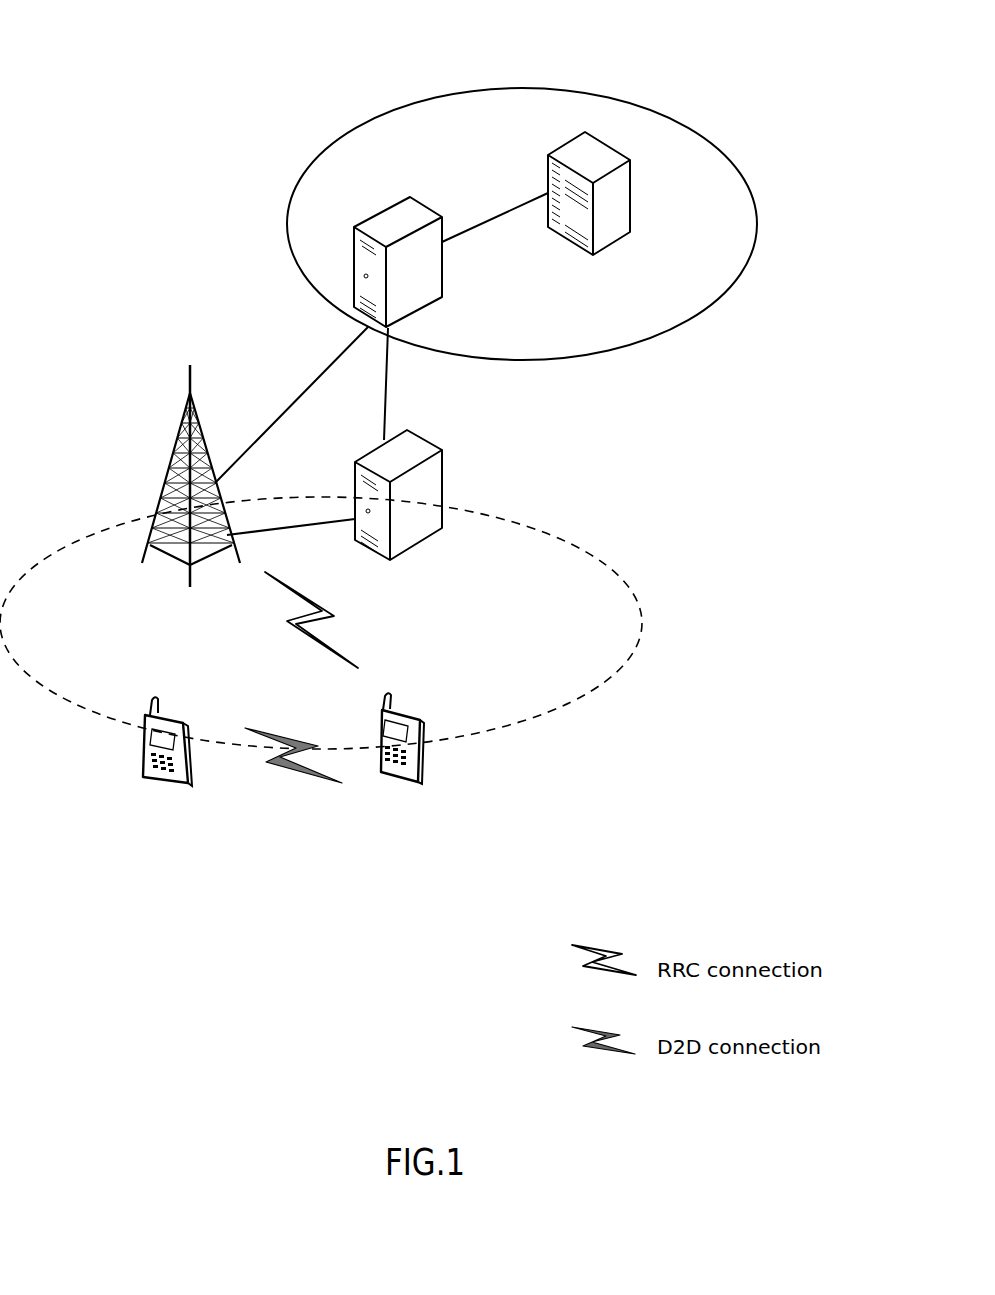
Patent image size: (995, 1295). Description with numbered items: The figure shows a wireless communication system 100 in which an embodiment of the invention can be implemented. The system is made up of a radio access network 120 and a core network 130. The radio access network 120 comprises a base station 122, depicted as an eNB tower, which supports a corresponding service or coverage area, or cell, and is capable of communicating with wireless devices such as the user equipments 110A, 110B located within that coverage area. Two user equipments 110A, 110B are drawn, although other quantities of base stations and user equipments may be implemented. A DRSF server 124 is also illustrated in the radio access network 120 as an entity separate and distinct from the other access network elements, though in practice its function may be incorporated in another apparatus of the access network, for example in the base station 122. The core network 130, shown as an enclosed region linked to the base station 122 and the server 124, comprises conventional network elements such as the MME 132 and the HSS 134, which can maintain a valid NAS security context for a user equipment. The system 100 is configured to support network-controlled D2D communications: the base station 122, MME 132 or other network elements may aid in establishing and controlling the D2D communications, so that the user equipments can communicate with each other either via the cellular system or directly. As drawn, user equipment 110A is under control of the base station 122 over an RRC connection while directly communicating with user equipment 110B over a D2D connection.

The wireless communication system 100 is at (65, 42).
The user equipment 110A is at (142, 777).
The user equipment 110B is at (392, 782).
The radio access network 120 is at (638, 598).
The base station 122 is at (195, 402).
The DRSF server 124 is at (442, 487).
The core network 130 is at (670, 123).
The MME 132 is at (430, 303).
The HSS 134 is at (613, 242).